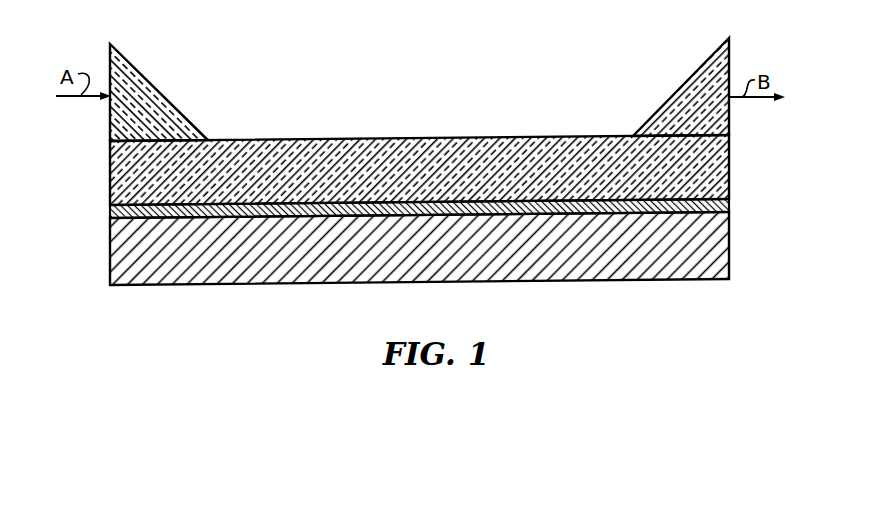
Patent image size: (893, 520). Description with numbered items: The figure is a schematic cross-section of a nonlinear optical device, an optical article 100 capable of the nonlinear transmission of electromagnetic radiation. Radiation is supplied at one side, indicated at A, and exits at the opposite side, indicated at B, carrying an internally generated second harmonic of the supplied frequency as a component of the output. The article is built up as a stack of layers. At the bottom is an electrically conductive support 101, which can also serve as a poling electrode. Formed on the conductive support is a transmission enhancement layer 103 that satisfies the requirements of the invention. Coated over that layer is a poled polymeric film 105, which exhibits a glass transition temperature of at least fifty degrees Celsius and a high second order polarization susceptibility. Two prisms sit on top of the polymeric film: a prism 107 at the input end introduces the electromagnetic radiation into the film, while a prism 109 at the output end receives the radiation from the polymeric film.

The optical article 100 is at (178, 310).
The electrically conductive support 101 is at (731, 264).
The transmission enhancement layer 103 is at (731, 206).
The poled polymeric film 105 is at (113, 181).
The prism 107 is at (163, 100).
The prism 109 is at (676, 91).